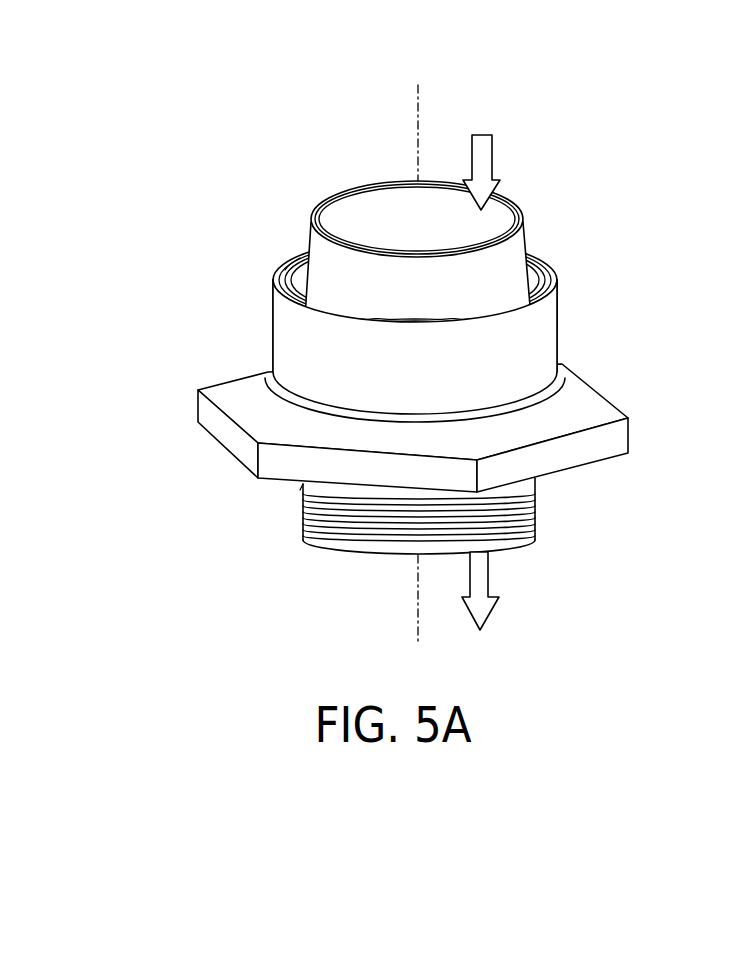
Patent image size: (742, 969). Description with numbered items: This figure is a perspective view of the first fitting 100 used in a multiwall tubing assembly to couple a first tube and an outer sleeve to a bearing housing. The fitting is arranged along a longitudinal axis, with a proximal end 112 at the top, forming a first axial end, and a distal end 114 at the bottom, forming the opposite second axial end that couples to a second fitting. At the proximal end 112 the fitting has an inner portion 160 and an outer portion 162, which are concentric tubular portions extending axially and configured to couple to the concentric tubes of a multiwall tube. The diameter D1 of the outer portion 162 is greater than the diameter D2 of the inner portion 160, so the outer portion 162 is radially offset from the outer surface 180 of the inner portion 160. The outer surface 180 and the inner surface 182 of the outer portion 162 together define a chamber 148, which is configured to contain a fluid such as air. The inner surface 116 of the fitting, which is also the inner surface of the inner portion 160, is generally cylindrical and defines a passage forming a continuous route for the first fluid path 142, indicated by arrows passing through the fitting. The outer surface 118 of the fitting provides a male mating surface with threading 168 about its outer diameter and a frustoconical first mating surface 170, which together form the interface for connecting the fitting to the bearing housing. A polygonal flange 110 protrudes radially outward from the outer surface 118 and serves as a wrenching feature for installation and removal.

The first fitting 100 is at (140, 150).
The flange 110 is at (610, 404).
The proximal end 112 is at (491, 229).
The distal end 114 is at (308, 573).
The inner surface 116 is at (359, 192).
The outer surface 118 is at (403, 389).
The first fluid path 142 is at (488, 150).
The chamber 148 is at (534, 270).
The inner portion 160 is at (508, 195).
The outer portion 162 is at (595, 282).
The threading 168 is at (537, 515).
The first mating surface 170 is at (302, 485).
The outer surface of inner portion 180 is at (403, 297).
The inner surface of outer portion 182 is at (292, 258).
The diameter of outer portion D1 is at (275, 337).
The diameter of inner portion D2 is at (317, 219).